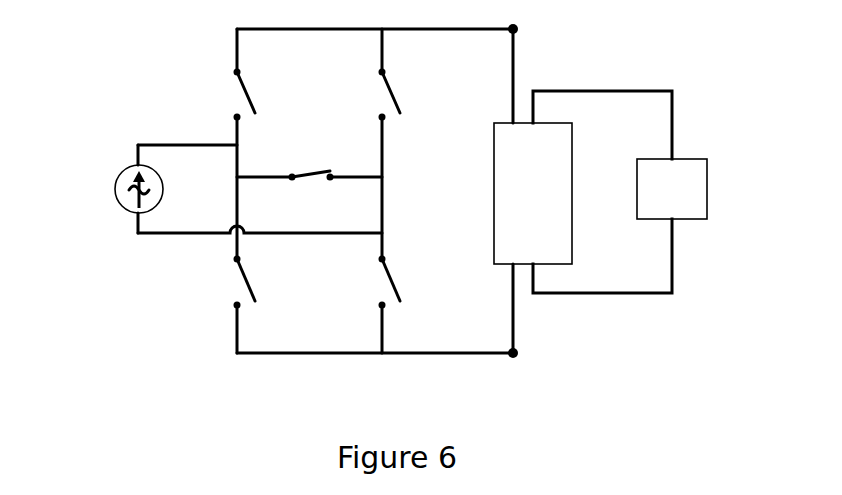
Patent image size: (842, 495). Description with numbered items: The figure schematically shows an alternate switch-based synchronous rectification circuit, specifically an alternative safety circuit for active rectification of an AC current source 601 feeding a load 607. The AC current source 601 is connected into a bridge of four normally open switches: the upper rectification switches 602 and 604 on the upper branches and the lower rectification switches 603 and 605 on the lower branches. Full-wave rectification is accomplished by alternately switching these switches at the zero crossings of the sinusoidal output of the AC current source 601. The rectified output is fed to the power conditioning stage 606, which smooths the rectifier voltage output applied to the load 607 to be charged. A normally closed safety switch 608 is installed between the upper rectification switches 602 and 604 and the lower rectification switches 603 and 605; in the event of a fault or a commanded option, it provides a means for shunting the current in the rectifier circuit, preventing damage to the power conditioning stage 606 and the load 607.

The AC current source 601 is at (142, 189).
The upper rectification switch 602 is at (218, 95).
The lower rectification switch 603 is at (221, 282).
The upper rectification switch 604 is at (415, 95).
The lower rectification switch 605 is at (409, 282).
The power conditioning stage 606 is at (533, 193).
The load 607 is at (647, 192).
The safety switch 608 is at (309, 163).